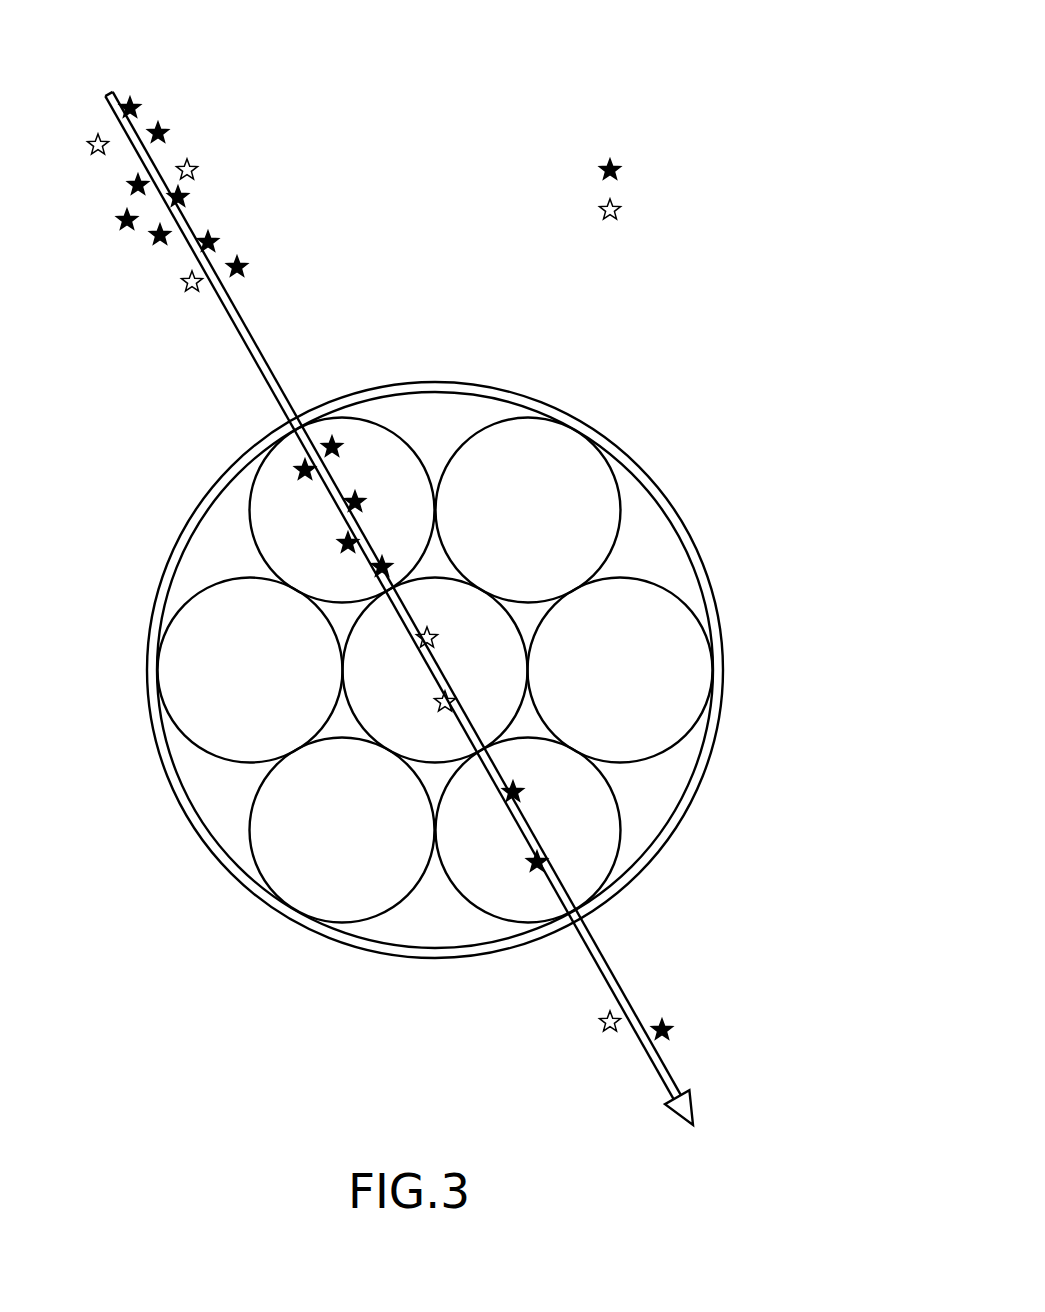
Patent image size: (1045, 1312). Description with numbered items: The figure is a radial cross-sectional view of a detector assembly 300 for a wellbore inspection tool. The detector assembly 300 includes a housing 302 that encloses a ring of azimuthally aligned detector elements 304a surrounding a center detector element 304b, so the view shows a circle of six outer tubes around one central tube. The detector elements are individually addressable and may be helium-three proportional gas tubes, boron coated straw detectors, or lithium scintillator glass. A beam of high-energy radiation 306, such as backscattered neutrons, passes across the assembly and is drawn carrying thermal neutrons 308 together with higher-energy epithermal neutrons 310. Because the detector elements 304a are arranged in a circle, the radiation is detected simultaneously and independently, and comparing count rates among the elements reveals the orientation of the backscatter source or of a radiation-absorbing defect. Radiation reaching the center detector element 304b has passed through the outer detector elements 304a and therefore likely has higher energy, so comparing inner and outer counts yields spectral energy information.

The detector assembly 300 is at (565, 100).
The housing 302 is at (670, 506).
The azimuthally aligned detector elements 304a is at (273, 478).
The center detector element 304b is at (372, 715).
The high-energy radiation 306 is at (168, 153).
The thermal neutrons 308 is at (331, 447).
The epithermal neutrons 310 is at (435, 641).